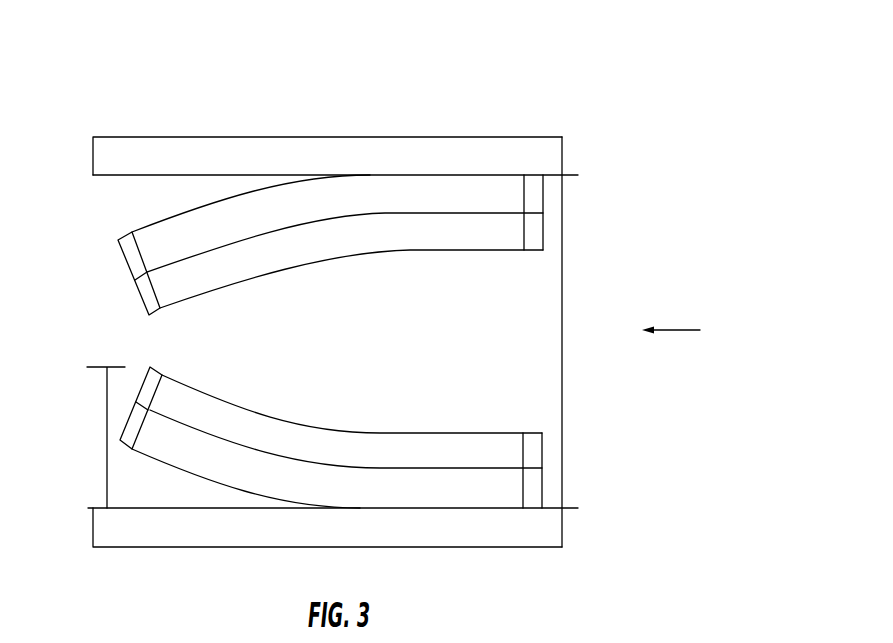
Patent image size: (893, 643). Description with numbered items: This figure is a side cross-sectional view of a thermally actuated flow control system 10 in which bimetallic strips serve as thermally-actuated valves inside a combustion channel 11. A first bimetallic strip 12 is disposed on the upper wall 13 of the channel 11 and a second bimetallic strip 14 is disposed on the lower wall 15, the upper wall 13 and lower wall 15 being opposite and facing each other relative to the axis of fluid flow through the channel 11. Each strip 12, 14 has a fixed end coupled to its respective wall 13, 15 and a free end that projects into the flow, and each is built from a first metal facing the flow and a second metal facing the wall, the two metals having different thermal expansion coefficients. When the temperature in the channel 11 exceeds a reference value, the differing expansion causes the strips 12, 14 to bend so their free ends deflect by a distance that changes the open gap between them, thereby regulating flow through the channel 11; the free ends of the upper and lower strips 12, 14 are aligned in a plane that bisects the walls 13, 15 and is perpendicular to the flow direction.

The thermally actuated flow control system 10 is at (538, 117).
The combustion channel 11 is at (523, 297).
The bimetallic strips of the first linear array 12 is at (374, 190).
The upper wall 13 is at (103, 177).
The bimetallic strips of the second linear array 14 is at (364, 492).
The lower wall 15 is at (135, 507).